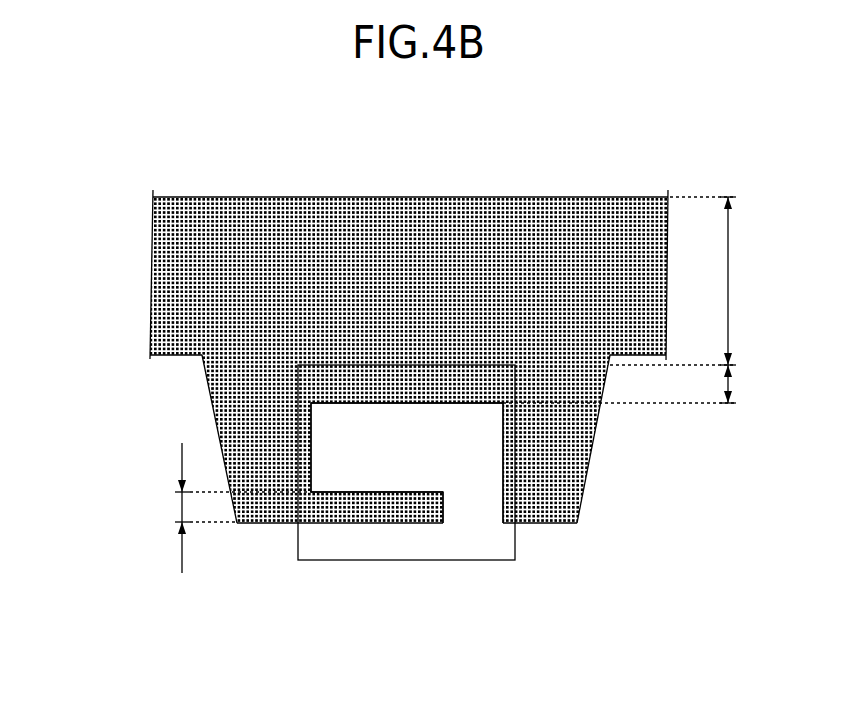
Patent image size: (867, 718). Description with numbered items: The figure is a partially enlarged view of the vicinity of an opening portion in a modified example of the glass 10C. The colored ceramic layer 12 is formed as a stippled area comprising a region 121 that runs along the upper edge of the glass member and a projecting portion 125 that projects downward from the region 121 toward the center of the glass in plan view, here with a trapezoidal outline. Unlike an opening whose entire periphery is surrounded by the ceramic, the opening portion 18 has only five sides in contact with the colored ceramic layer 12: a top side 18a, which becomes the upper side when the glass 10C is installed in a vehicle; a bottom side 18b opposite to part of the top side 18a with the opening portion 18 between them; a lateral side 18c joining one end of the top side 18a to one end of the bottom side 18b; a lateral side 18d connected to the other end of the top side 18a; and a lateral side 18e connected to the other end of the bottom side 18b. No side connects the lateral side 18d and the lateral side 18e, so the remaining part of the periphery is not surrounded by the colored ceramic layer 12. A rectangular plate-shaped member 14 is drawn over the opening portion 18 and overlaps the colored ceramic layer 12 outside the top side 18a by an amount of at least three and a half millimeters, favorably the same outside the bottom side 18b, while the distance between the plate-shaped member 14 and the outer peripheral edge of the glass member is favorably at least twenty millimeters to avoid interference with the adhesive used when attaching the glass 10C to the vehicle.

The glass 10C is at (108, 136).
The colored ceramic layer 12 is at (612, 153).
The region 121 is at (137, 195).
The projecting portion 125 is at (137, 360).
The plate-shaped member 14 is at (345, 560).
The opening portion 18 is at (472, 449).
The top side 18a is at (363, 404).
The bottom side 18b is at (420, 491).
The lateral side 18c is at (312, 472).
The lateral side 18d is at (503, 418).
The lateral side 18e is at (444, 509).